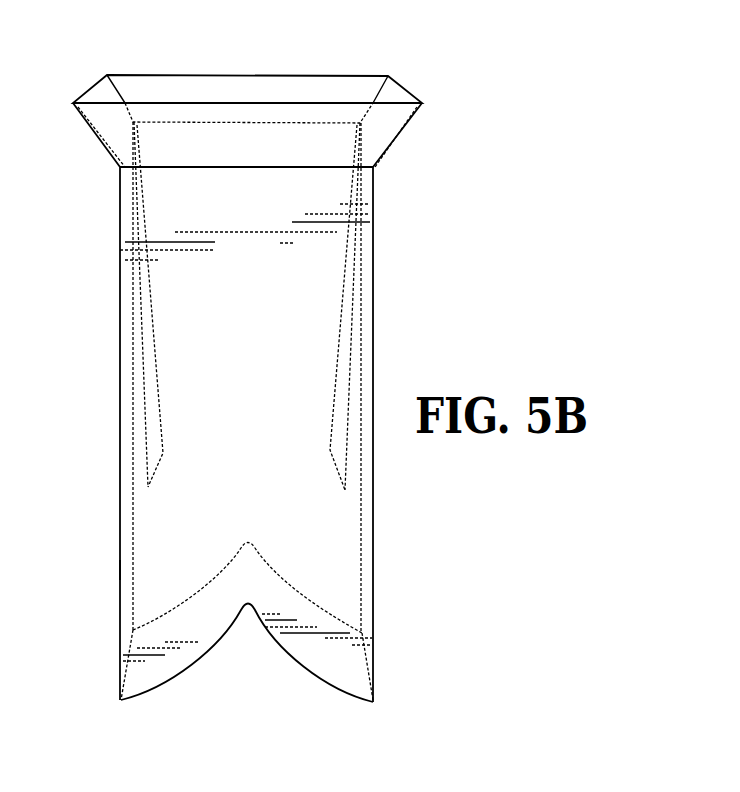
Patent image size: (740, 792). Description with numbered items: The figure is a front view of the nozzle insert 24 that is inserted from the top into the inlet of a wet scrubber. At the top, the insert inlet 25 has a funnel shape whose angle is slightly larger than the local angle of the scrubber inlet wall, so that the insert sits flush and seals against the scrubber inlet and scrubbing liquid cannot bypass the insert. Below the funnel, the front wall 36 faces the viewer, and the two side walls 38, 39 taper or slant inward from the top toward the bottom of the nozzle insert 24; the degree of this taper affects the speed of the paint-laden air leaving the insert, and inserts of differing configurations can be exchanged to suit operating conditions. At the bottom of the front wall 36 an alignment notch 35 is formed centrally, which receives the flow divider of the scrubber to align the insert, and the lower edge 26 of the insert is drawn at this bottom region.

The nozzle insert 24 is at (374, 235).
The insert inlet 25 is at (357, 86).
The bottom edge 26 is at (308, 674).
The alignment notch 35 is at (243, 636).
The front wall 36 is at (127, 566).
The side wall 38 is at (135, 396).
The side wall 39 is at (372, 404).